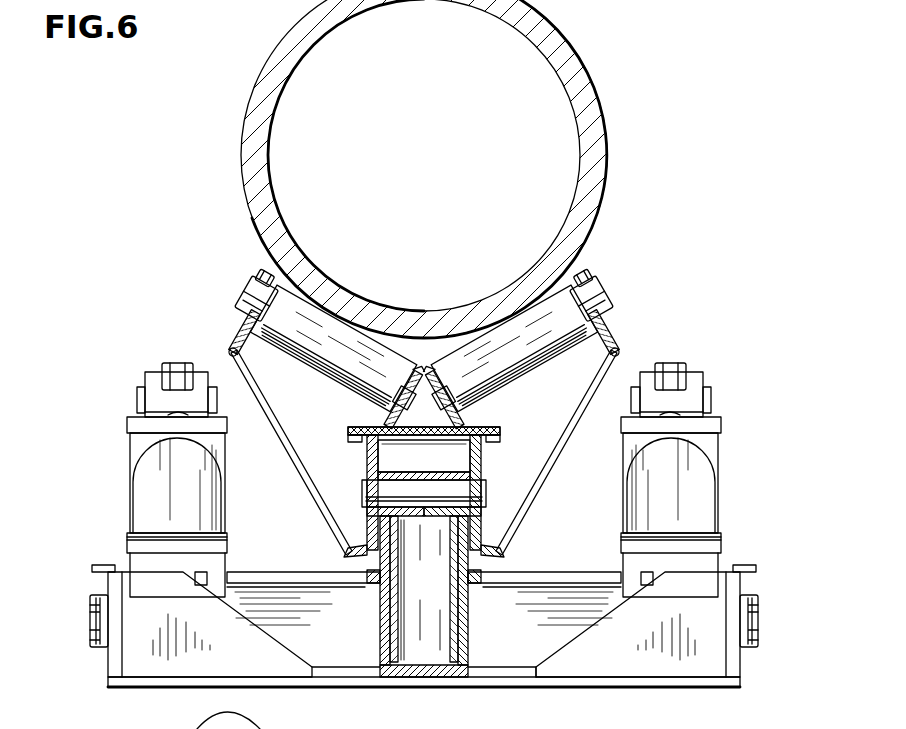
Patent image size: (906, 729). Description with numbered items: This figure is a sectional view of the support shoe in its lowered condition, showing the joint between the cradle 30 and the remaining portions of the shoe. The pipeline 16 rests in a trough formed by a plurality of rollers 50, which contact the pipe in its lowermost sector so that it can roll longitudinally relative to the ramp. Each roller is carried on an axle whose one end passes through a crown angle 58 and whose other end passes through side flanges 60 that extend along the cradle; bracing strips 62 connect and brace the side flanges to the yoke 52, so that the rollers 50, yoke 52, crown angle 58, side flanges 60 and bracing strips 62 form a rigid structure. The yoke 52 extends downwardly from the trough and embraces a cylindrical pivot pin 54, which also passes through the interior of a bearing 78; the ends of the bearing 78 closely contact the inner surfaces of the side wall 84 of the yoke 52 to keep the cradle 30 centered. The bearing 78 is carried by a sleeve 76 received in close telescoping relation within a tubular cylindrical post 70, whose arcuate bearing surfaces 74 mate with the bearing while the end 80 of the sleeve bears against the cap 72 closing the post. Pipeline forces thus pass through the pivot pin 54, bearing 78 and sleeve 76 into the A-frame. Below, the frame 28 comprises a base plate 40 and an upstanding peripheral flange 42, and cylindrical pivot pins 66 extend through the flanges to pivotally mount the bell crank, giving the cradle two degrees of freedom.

The pipeline 16 is at (578, 72).
The frame 28 is at (108, 687).
The cradle 30 is at (235, 298).
The base plate 40 is at (656, 688).
The upstanding peripheral flange 42 is at (135, 655).
The rollers 50 is at (353, 342).
The yoke 52 is at (354, 549).
The cylindrical pivot pin 54 is at (486, 499).
The crown angle 58 is at (446, 400).
The side flanges 60 is at (232, 346).
The bracing strips 62 is at (297, 470).
The cylindrical pivot pins 66 is at (90, 616).
The cylindrical post 70 is at (469, 637).
The cap 72 is at (425, 680).
The arcuate bearing surfaces 74 is at (396, 548).
The sleeve 76 is at (459, 583).
The bearing 78 is at (432, 478).
The end 80 is at (396, 678).
The side wall 84 is at (380, 468).